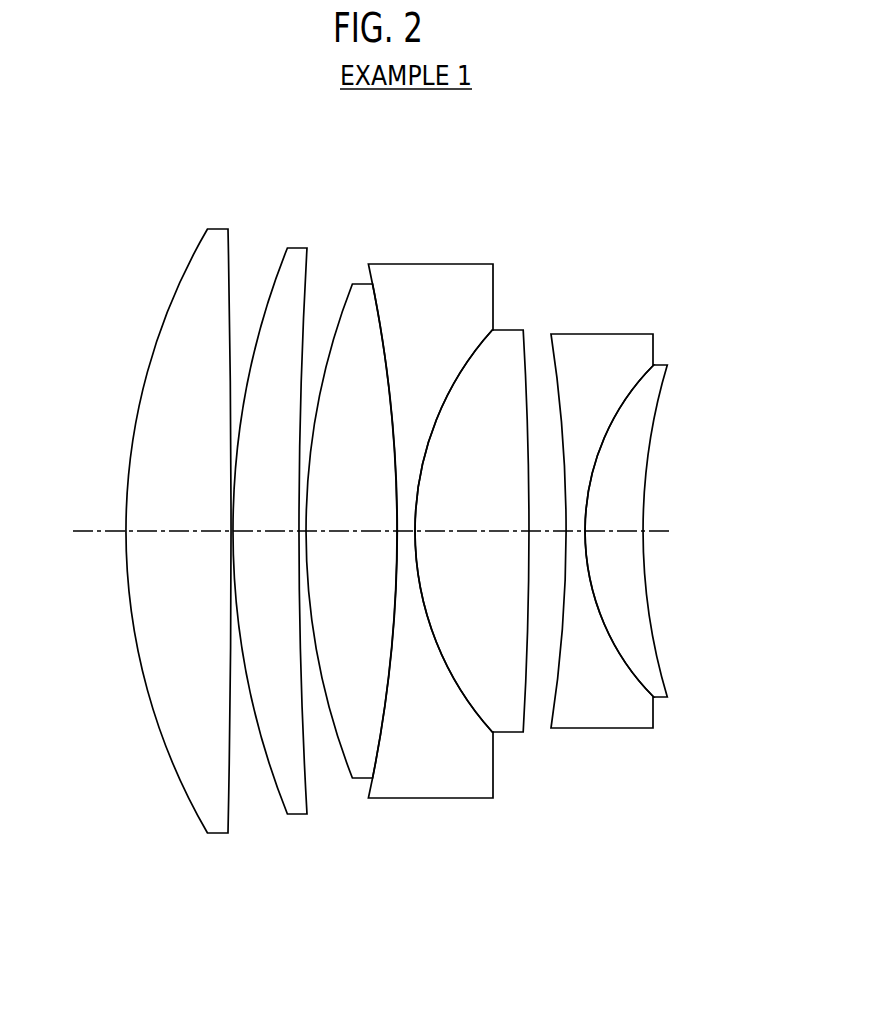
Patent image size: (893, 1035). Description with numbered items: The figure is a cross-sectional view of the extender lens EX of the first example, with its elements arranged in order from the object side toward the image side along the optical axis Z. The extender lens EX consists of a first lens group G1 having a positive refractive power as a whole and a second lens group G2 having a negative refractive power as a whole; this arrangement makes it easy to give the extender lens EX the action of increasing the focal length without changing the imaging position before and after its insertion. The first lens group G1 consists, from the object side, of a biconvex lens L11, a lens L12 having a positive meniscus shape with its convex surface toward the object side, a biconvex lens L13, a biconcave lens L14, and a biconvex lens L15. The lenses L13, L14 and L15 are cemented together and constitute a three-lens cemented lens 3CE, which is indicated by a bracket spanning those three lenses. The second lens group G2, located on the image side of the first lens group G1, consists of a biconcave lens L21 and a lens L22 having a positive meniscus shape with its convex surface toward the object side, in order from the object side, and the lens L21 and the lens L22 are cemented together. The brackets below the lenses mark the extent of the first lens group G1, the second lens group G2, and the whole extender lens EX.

The biconvex lens L11 is at (217, 236).
The positive meniscus lens L12 is at (300, 254).
The biconvex lens L13 is at (360, 292).
The biconcave lens L14 is at (430, 276).
The biconvex lens L15 is at (491, 448).
The biconcave lens L21 is at (603, 347).
The positive meniscus lens L22 is at (660, 373).
The three-lens cemented lens 3CE is at (438, 461).
The first lens group G1 is at (347, 517).
The second lens group G2 is at (638, 537).
The extender lens EX is at (426, 547).
The optical axis Z is at (93, 529).